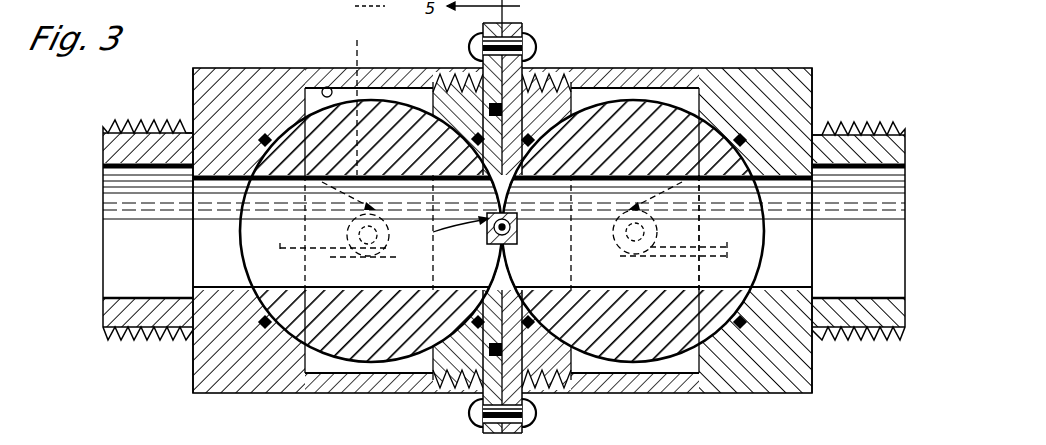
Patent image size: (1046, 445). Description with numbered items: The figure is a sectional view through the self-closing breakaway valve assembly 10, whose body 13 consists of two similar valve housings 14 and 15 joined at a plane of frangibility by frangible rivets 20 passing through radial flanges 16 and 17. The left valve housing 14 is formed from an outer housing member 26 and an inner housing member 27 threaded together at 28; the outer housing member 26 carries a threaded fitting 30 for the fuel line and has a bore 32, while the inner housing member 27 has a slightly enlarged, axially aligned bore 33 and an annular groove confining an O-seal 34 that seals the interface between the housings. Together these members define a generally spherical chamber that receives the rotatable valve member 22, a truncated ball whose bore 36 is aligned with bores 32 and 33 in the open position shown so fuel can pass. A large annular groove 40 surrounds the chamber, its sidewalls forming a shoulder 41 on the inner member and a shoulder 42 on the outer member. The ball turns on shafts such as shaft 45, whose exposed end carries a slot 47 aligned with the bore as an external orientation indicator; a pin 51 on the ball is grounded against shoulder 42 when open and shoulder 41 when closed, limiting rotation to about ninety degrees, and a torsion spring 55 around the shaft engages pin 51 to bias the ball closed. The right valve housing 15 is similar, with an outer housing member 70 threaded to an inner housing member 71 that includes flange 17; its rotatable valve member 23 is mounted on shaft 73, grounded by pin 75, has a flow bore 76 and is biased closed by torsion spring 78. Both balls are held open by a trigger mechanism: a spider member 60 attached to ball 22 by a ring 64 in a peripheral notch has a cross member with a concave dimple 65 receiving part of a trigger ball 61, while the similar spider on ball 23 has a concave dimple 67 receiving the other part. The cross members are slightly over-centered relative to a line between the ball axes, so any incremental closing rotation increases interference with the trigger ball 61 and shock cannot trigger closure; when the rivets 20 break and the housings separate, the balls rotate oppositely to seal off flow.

The self-closing breakaway valve assembly 10 is at (786, 57).
The body 13 is at (258, 68).
The valve housing 14 is at (291, 396).
The valve housing 15 is at (770, 394).
The radial flange 16 is at (483, 430).
The radial flange 17 is at (520, 25).
The frangible rivets 20 is at (533, 52).
The rotatable valve member 22 is at (398, 352).
The rotatable valve member 23 is at (663, 118).
The outer housing member 26 is at (193, 98).
The inner housing member 27 is at (455, 80).
The threaded connection 28 is at (464, 73).
The threaded fitting 30 is at (128, 332).
The bore 32 is at (207, 285).
The bore 33 is at (493, 290).
The O-seal 34 is at (520, 352).
The bore 36 is at (247, 252).
The annular groove 40 is at (330, 88).
The shoulder 41 is at (400, 88).
The shoulder 42 is at (306, 95).
The shaft 45 is at (385, 255).
The slot 47 is at (355, 8).
The pin 51 is at (359, 97).
The torsion spring 55 is at (328, 256).
The spider member 60 is at (446, 227).
The trigger ball 61 is at (509, 244).
The ring 64 is at (522, 223).
The concave dimple 65 is at (492, 234).
The concave dimple 67 is at (528, 233).
The outer housing member 70 is at (791, 97).
The inner housing member 71 is at (598, 100).
The shaft 73 is at (670, 233).
The pin 75 is at (729, 232).
The bore 76 is at (694, 166).
The torsion spring 78 is at (708, 250).